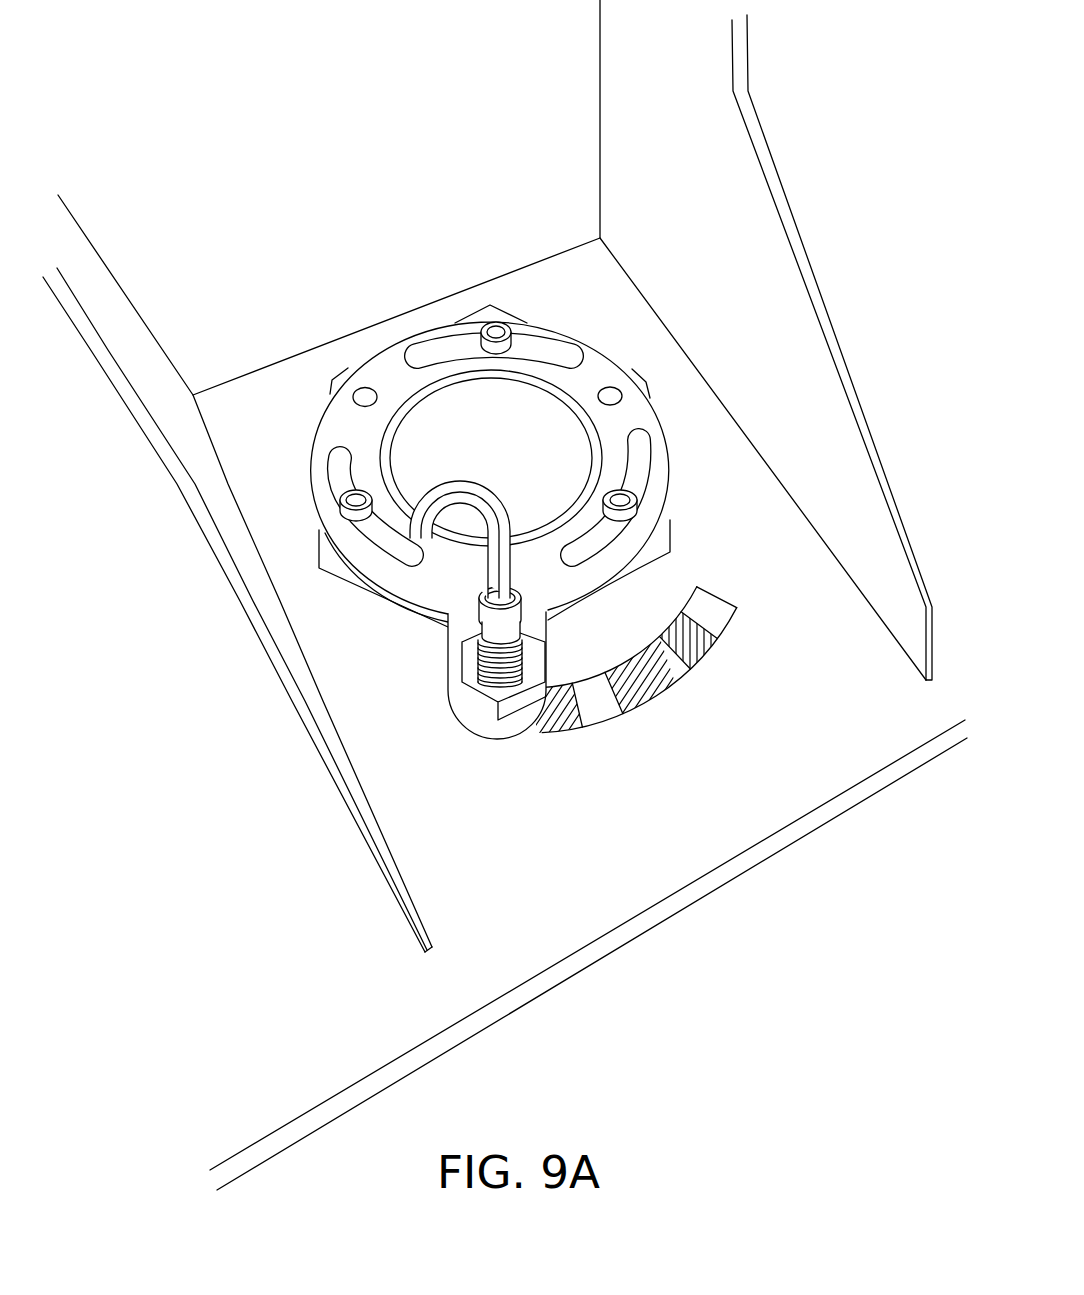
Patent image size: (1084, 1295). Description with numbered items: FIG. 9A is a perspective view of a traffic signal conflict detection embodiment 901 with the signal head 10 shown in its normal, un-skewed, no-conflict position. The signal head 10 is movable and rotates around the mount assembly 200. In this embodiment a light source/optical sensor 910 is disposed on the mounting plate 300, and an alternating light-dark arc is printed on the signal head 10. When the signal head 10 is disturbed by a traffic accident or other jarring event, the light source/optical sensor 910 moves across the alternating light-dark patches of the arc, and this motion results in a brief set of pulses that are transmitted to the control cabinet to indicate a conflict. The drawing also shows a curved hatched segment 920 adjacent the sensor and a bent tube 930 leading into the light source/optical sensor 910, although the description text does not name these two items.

The signal head 10 is at (93, 293).
The mount assembly 200 is at (475, 250).
The mounting plate 300 is at (587, 382).
The fifth traffic signal conflict detection embodiment 901 is at (391, 70).
The light source/optical sensor 910 is at (473, 660).
The curved segment 920 is at (682, 711).
The tube 930 is at (491, 503).